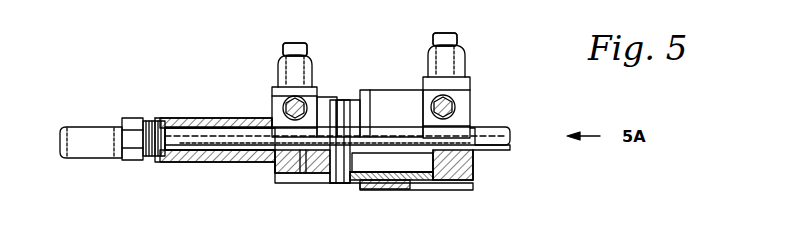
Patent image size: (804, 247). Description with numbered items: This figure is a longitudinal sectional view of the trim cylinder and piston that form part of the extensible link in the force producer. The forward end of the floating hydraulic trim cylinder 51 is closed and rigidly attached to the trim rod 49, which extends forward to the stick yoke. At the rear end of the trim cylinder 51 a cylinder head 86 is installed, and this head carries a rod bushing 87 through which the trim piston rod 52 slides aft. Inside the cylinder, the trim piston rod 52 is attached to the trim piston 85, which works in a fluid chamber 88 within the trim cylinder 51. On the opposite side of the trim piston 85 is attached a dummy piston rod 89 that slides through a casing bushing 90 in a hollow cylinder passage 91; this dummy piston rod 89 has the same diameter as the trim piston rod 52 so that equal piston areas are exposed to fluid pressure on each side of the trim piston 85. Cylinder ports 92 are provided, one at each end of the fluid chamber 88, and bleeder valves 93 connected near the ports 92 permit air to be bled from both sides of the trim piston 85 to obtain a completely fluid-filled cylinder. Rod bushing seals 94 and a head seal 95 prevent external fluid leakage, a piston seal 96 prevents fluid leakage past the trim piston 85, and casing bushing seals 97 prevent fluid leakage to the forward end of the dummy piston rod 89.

The trim rod 49 is at (118, 127).
The dummy piston rod 89 is at (225, 118).
The bleeder valves 93 is at (270, 110).
The cylinder ports 92 is at (300, 45).
The trim cylinder 51 is at (335, 97).
The cylinder head 86 is at (403, 90).
The trim piston rod 52 is at (495, 128).
The rod bushing 87 is at (478, 160).
The hollow cylinder passage 91 is at (240, 162).
The casing bushing 90 is at (282, 175).
The casing bushing seals 97 is at (304, 176).
The piston seal 96 is at (340, 186).
The trim piston 85 is at (350, 182).
The fluid chamber 88 is at (392, 162).
The head seal 95 is at (405, 190).
The rod bushing seals 94 is at (470, 172).